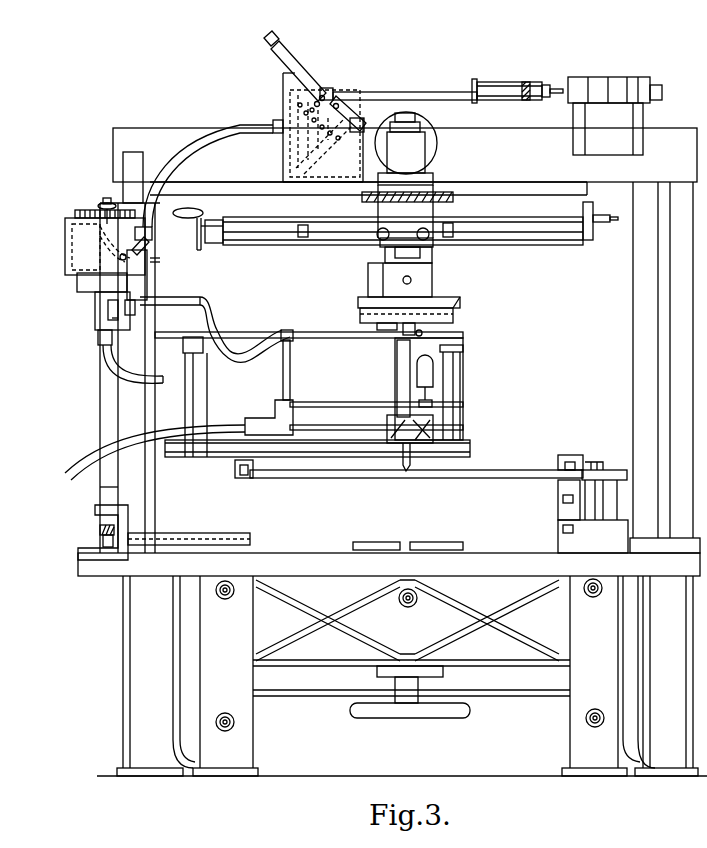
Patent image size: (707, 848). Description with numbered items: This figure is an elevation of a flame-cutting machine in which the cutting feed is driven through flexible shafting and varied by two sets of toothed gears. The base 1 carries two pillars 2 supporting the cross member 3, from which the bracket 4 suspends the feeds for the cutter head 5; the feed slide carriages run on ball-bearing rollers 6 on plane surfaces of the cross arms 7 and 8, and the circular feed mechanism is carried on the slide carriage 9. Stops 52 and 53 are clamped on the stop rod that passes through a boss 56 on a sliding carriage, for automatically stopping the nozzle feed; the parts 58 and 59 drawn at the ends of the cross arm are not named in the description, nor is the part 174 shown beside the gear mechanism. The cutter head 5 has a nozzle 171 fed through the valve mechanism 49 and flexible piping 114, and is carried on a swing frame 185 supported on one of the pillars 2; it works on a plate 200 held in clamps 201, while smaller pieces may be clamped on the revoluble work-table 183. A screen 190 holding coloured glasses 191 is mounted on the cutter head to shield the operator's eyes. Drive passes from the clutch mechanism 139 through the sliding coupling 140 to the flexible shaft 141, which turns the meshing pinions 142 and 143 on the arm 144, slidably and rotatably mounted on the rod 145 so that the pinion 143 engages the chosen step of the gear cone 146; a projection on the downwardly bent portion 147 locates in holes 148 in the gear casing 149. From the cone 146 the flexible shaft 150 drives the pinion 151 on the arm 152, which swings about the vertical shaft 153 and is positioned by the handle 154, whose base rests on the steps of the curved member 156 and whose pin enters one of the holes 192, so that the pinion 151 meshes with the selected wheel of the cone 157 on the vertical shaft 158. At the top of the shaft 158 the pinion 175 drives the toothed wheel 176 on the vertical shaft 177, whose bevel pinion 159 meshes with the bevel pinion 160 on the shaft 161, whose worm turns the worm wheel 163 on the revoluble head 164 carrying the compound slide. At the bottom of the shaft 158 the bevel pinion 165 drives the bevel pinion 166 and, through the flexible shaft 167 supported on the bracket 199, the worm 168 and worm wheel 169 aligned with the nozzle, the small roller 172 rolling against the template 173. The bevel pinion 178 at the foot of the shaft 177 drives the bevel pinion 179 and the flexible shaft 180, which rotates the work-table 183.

The base 1 is at (138, 695).
The pillars 2 is at (130, 396).
The cross member 3 is at (536, 182).
The bracket 4 is at (440, 147).
The cutter head 5 is at (440, 390).
The ball-bearing rollers 6 is at (380, 243).
The cross arm 7 is at (516, 245).
The cross arm 8 is at (432, 250).
The slide carriage 9 is at (385, 283).
The valve mechanism 49 is at (262, 425).
The stop 52 is at (298, 236).
The stop 53 is at (452, 240).
The boss 56 is at (398, 256).
The bearing block 58 is at (228, 234).
The end bearing 59 is at (578, 245).
The flexible piping 114 is at (88, 458).
The clutch mechanism 139 is at (598, 77).
The sliding coupling 140 is at (505, 82).
The flexible shaft 141 is at (434, 92).
The pinion 142 is at (326, 96).
The pinion 143 is at (338, 103).
The arm 144 is at (322, 96).
The rod 145 is at (317, 100).
The gear cone 146 is at (300, 82).
The downwardly bent portion 147 is at (352, 108).
The holes 148 is at (304, 112).
The gear casing 149 is at (288, 157).
The flexible shaft 150 is at (215, 132).
The pinion 151 is at (148, 256).
The arm 152 is at (150, 262).
The vertical shaft 153 is at (175, 222).
The handle 154 is at (77, 282).
The curved member 156 is at (120, 257).
The cone 157 is at (65, 233).
The vertical shaft 158 is at (95, 298).
The bevel pinion 159 is at (104, 204).
The bevel pinion 160 is at (106, 200).
The shaft 161 is at (237, 190).
The worm wheel 163 is at (455, 198).
The revoluble head 164 is at (436, 178).
The bevel pinion 165 is at (100, 312).
The bevel pinion 166 is at (110, 330).
The flexible shaft 167 is at (220, 338).
The worm 168 is at (420, 329).
The worm wheel 169 is at (404, 340).
The nozzle 171 is at (407, 472).
The roller 172 is at (395, 316).
The template 173 is at (440, 321).
The drain tube 174 is at (112, 369).
The pinion 175 is at (100, 211).
The toothed wheel 176 is at (78, 211).
The vertical shaft 177 is at (105, 488).
The bevel pinion 178 is at (100, 532).
The bevel pinion 179 is at (103, 541).
The flexible shaft 180 is at (175, 543).
The work-table 183 is at (365, 543).
The swing frame 185 is at (253, 340).
The screen 190 is at (395, 463).
The coloured glasses 191 is at (430, 465).
The holes 192 is at (83, 240).
The bracket 199 is at (283, 386).
The plate 200 is at (483, 476).
The clamps 201 is at (250, 476).